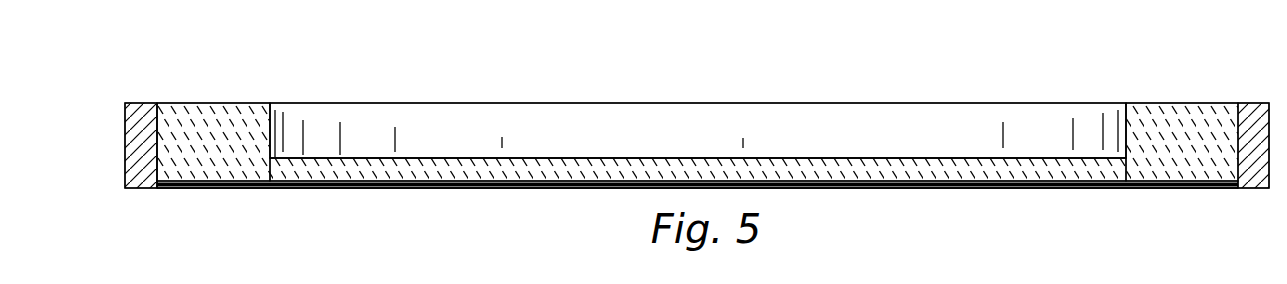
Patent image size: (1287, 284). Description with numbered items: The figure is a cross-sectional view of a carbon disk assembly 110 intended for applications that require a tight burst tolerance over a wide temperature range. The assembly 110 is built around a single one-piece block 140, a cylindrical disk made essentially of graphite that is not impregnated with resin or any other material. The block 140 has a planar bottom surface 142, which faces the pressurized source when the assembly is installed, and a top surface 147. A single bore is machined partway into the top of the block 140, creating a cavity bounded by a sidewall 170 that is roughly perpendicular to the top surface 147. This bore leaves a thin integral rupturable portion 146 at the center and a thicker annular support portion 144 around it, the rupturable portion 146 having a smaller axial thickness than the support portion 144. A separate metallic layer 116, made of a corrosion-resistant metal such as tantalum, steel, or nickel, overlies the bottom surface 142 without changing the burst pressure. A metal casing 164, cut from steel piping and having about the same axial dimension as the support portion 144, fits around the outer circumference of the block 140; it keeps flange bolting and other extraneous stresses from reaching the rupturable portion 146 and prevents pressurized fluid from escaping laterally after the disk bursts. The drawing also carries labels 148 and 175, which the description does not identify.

The carbon disk assembly 110 is at (320, 42).
The layer 116 is at (1220, 188).
The block 140 is at (1182, 138).
The bottom surface 142 is at (1172, 188).
The annular support portion 144 is at (157, 82).
The integral rupturable portion 146 is at (1125, 82).
The top surface 147 is at (777, 158).
The end wall 148 is at (155, 140).
The metal casing 164 is at (125, 118).
The sidewall 170 is at (270, 133).
The cavity 175 is at (985, 136).